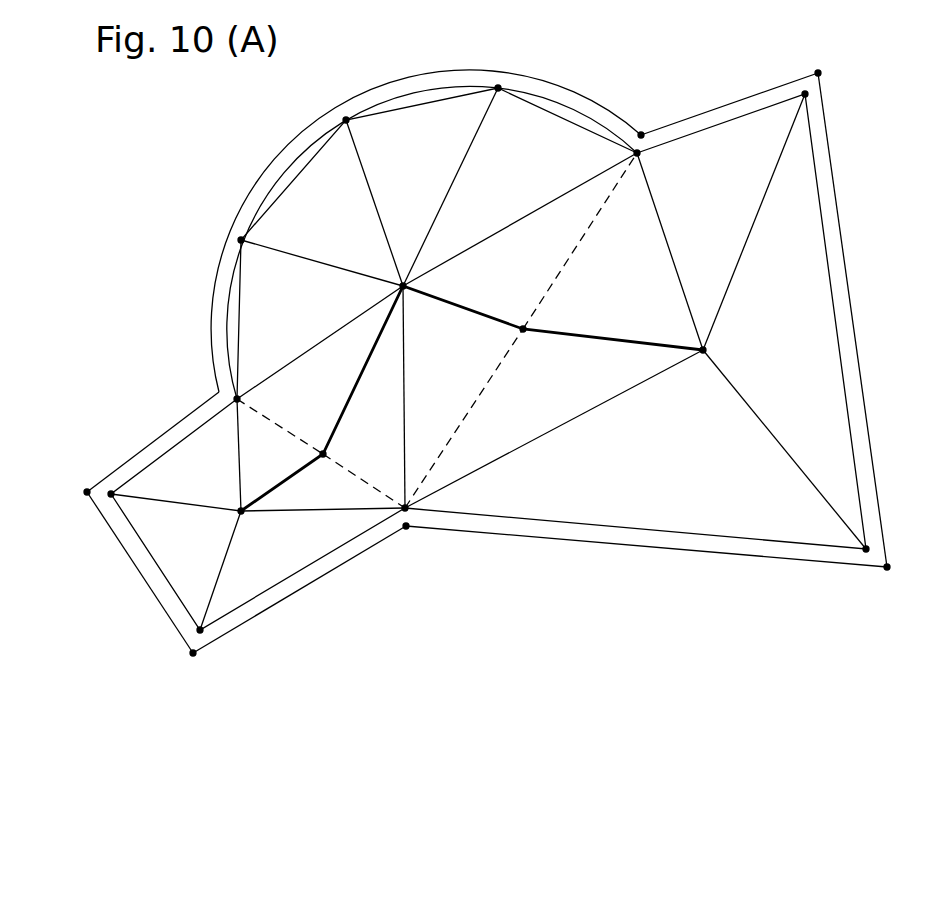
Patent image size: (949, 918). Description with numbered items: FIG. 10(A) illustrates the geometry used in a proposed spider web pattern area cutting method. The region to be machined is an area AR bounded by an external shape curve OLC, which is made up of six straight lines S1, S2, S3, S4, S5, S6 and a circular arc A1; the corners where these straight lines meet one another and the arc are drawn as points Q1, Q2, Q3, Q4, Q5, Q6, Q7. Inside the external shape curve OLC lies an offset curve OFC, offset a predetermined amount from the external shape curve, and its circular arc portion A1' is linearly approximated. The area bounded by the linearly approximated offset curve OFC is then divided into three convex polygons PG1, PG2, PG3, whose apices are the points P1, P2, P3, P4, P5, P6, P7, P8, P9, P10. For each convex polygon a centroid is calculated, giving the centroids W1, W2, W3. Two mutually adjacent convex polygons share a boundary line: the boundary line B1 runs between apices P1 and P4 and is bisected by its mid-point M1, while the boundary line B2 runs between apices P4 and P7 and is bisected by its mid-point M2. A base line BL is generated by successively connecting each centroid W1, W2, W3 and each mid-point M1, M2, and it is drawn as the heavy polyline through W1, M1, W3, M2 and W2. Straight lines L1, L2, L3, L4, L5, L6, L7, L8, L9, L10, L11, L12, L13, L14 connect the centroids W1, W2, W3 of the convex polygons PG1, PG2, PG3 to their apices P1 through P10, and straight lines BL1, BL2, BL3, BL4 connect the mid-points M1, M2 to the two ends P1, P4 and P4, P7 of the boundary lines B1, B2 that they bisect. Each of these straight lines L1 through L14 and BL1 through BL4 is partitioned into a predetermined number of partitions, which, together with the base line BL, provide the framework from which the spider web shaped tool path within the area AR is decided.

The outer polygon vertex Q1 is at (218, 393).
The outer polygon vertex Q2 is at (86, 492).
The outer polygon vertex Q3 is at (180, 664).
The outer polygon vertex Q4 is at (411, 538).
The outer polygon vertex Q5 is at (901, 568).
The outer polygon vertex Q6 is at (831, 67).
The outer polygon vertex Q7 is at (641, 133).
The apex of convex polygon P1 is at (240, 399).
The apex of convex polygon P2 is at (111, 497).
The apex of convex polygon P3 is at (203, 633).
The apex of convex polygon P4 is at (412, 508).
The apex of convex polygon P5 is at (868, 549).
The apex of convex polygon P6 is at (807, 94).
The apex of convex polygon P7 is at (653, 160).
The apex of convex polygon P8 is at (498, 90).
The apex of convex polygon P9 is at (348, 120).
The apex of convex polygon P10 is at (243, 239).
The centroid of convex polygon W1 is at (240, 509).
The centroid of convex polygon W2 is at (722, 352).
The centroid of convex polygon W3 is at (401, 285).
The mid-point of boundary line M1 is at (323, 452).
The mid-point of boundary line M2 is at (522, 328).
The straight line connecting centroid and apex L1 is at (238, 460).
The straight line connecting centroid and apex L2 is at (160, 501).
The straight line connecting centroid and apex L3 is at (234, 534).
The straight line connecting centroid and apex L4 is at (290, 509).
The straight line connecting centroid and apex L5 is at (405, 392).
The straight line connecting centroid and apex L6 is at (556, 427).
The straight line connecting centroid and apex L7 is at (752, 410).
The straight line connecting centroid and apex L8 is at (728, 290).
The straight line connecting centroid and apex L9 is at (666, 237).
The straight line connecting centroid and apex L10 is at (527, 215).
The straight line connecting centroid and apex L11 is at (455, 178).
The straight line connecting centroid and apex L12 is at (372, 198).
The straight line connecting centroid and apex L13 is at (318, 263).
The straight line connecting centroid and apex L14 is at (325, 338).
The base line BL is at (620, 341).
The straight line connecting mid-point and boundary line end BL1 is at (338, 466).
The straight line connecting mid-point and boundary line end BL2 is at (281, 427).
The straight line connecting mid-point and boundary line end BL3 is at (501, 364).
The straight line connecting mid-point and boundary line end BL4 is at (558, 276).
The straight line of external shape curve S1 is at (153, 441).
The straight line of external shape curve S2 is at (157, 598).
The straight line of external shape curve S3 is at (289, 598).
The straight line of external shape curve S4 is at (610, 544).
The straight line of external shape curve S5 is at (857, 345).
The straight line of external shape curve S6 is at (730, 103).
The circular arc A1 is at (426, 212).
The circular arc portion of offset curve A1' is at (432, 232).
The boundary line B1 is at (354, 484).
The boundary line B2 is at (458, 428).
The convex polygon PG1 is at (357, 540).
The convex polygon PG2 is at (740, 539).
The convex polygon PG3 is at (243, 328).
The area AR is at (800, 245).
The external shape curve OLC is at (849, 277).
The offset curve OFC is at (852, 439).